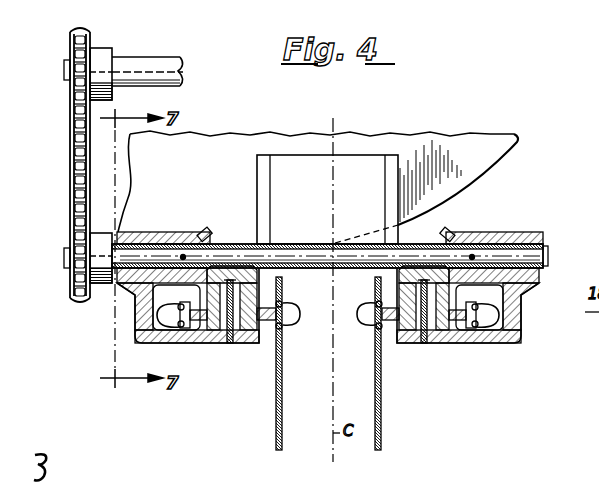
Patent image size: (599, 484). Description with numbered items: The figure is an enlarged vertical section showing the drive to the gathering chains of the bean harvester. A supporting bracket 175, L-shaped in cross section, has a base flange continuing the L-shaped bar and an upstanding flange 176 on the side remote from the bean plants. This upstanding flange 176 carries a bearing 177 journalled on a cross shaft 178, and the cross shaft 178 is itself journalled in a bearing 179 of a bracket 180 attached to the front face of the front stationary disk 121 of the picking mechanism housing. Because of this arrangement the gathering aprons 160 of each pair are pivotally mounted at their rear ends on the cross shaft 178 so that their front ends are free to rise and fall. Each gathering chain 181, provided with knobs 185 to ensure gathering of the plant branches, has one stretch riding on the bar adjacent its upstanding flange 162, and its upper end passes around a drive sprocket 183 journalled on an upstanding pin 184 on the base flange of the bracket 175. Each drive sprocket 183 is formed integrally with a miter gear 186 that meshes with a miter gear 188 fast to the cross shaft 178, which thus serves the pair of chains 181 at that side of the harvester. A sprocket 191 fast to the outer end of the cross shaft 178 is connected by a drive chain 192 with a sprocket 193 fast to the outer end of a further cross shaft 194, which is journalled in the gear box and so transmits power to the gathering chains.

The front stationary disk 121 is at (457, 116).
The gathering apron 160 is at (272, 439).
The upstanding flange 162 is at (590, 312).
The supporting bracket 175 is at (164, 343).
The upstanding flange 176 is at (140, 316).
The bearing 177 is at (165, 243).
The cross shaft 178 is at (293, 244).
The bearing 179 is at (330, 269).
The bracket 180 is at (370, 194).
The chain 181 is at (282, 330).
The drive sprocket 183 is at (269, 329).
The upstanding pin 184 is at (217, 330).
The knob 185 is at (289, 318).
The miter gear 186 is at (246, 280).
The miter gear 188 is at (203, 230).
The sprocket 191 is at (80, 300).
The drive chain 192 is at (70, 166).
The sprocket 193 is at (79, 31).
The cross shaft 194 is at (151, 62).